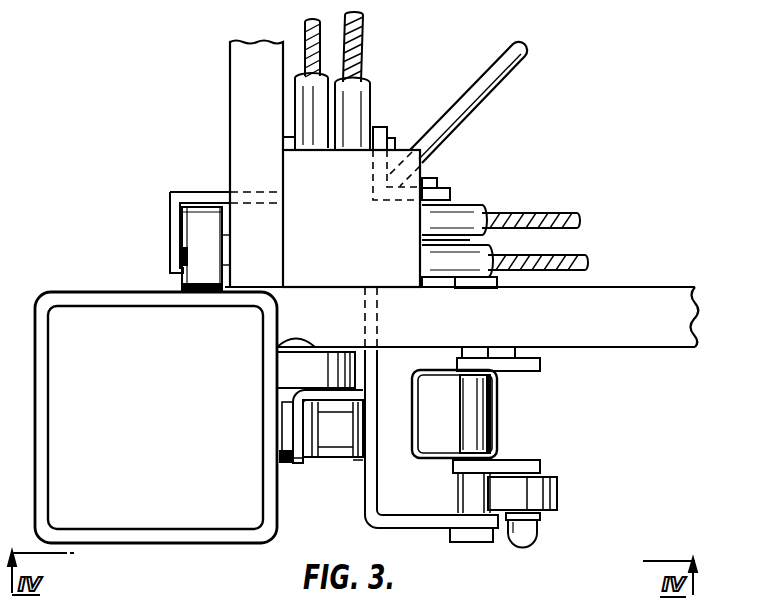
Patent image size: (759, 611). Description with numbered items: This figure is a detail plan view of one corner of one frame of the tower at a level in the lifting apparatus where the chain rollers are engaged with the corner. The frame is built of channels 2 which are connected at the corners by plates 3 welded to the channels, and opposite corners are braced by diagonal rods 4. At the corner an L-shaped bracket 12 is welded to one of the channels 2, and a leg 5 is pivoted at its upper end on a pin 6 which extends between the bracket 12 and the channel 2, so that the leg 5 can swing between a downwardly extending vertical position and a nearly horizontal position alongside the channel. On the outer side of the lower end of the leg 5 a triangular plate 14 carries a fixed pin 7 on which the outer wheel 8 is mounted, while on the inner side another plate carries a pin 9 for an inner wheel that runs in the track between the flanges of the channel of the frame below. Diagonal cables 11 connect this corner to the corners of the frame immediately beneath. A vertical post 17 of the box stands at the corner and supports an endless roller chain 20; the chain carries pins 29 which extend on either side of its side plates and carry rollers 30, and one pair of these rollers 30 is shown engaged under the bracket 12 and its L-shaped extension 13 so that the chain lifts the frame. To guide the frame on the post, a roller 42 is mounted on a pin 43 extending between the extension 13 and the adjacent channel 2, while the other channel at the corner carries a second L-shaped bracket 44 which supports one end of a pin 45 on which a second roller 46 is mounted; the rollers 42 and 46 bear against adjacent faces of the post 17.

The channel 2 is at (245, 127).
The plate 3 is at (297, 170).
The diagonal rod 4 is at (463, 107).
The leg 5 is at (498, 410).
The pin 6 is at (480, 437).
The pin 7 is at (532, 528).
The outer wheel 8 is at (550, 493).
The pin 9 is at (528, 353).
The diagonal cable 11 is at (307, 38).
The L-shaped bracket 12 is at (367, 512).
The L-shaped extension 13 is at (297, 450).
The triangular plate 14 is at (528, 371).
The vertical post 17 is at (86, 298).
The endless roller chain 20 is at (323, 440).
The pin 29 is at (282, 430).
The roller 30 is at (282, 462).
The roller 42 is at (287, 373).
The pin 43 is at (317, 345).
The L-shaped bracket 44 is at (172, 213).
The pin 45 is at (180, 252).
The second roller 46 is at (195, 281).